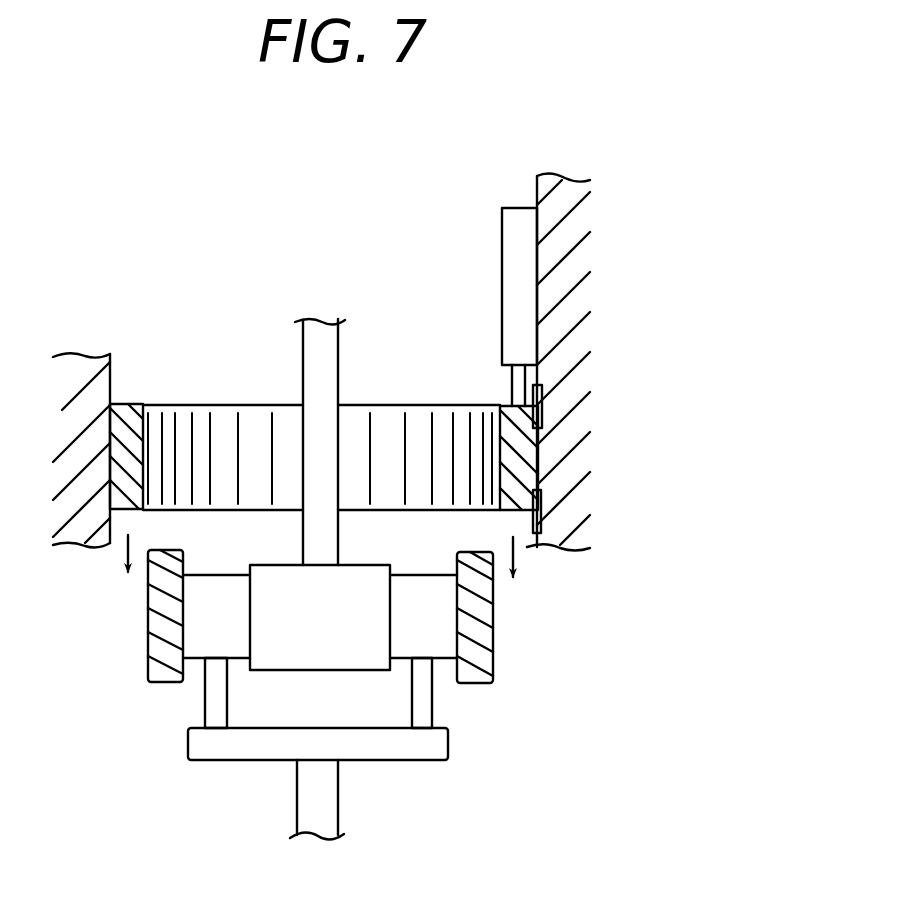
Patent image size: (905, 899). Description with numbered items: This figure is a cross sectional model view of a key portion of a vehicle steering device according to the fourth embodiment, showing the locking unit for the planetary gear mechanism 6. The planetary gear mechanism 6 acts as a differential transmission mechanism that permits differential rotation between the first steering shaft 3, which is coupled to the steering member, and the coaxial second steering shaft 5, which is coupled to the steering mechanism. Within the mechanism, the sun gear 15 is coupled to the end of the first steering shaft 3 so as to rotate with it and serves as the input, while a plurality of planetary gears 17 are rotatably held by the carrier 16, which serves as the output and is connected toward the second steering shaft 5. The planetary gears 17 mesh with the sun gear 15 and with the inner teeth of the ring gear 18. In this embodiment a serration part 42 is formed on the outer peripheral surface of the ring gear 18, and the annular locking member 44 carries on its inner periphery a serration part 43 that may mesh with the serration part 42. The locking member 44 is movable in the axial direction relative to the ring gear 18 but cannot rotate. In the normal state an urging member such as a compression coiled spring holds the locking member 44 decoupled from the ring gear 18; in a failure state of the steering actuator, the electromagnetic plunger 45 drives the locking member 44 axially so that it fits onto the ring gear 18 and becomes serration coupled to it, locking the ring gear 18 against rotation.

The first steering shaft 3 is at (303, 370).
The second steering shaft 5 is at (303, 808).
The planetary gear mechanism 6 is at (508, 622).
The sun gear 15 is at (312, 652).
The carrier 16 is at (420, 750).
The planetary gears 17 is at (198, 647).
The ring gear 18 is at (146, 662).
The serration part 42 is at (148, 607).
The serration part 43 is at (493, 430).
The locking member 44 is at (124, 401).
The plunger 45 is at (502, 292).